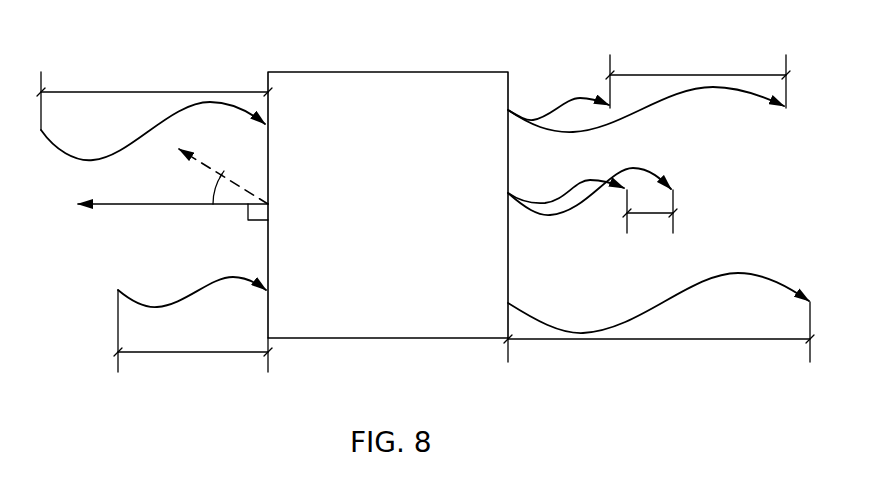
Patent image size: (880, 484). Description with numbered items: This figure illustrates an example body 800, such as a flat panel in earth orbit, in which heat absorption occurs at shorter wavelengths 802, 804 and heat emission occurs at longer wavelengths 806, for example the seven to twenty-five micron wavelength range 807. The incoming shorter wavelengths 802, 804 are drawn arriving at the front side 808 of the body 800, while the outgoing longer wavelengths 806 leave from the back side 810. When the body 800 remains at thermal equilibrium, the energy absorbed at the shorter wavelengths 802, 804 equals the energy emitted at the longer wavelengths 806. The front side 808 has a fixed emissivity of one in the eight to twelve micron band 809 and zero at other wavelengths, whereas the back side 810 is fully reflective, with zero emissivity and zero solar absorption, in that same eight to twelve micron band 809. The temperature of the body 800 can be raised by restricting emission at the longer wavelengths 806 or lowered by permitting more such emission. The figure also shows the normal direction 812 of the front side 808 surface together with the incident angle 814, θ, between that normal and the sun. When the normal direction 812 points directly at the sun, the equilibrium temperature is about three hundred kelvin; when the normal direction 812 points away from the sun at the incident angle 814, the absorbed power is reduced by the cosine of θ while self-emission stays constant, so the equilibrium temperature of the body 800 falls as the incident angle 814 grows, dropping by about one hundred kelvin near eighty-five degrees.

The body 800 is at (403, 87).
The shorter wavelength 802 is at (154, 112).
The shorter wavelength 804 is at (193, 324).
The longer wavelengths 806 is at (659, 323).
The 7-25 μm wavelength range 807 is at (715, 60).
The front side 808 is at (265, 241).
The 8-12 micron band 809 is at (653, 223).
The back side 810 is at (511, 258).
The normal direction 812 is at (120, 204).
The incident angle 814 is at (198, 166).